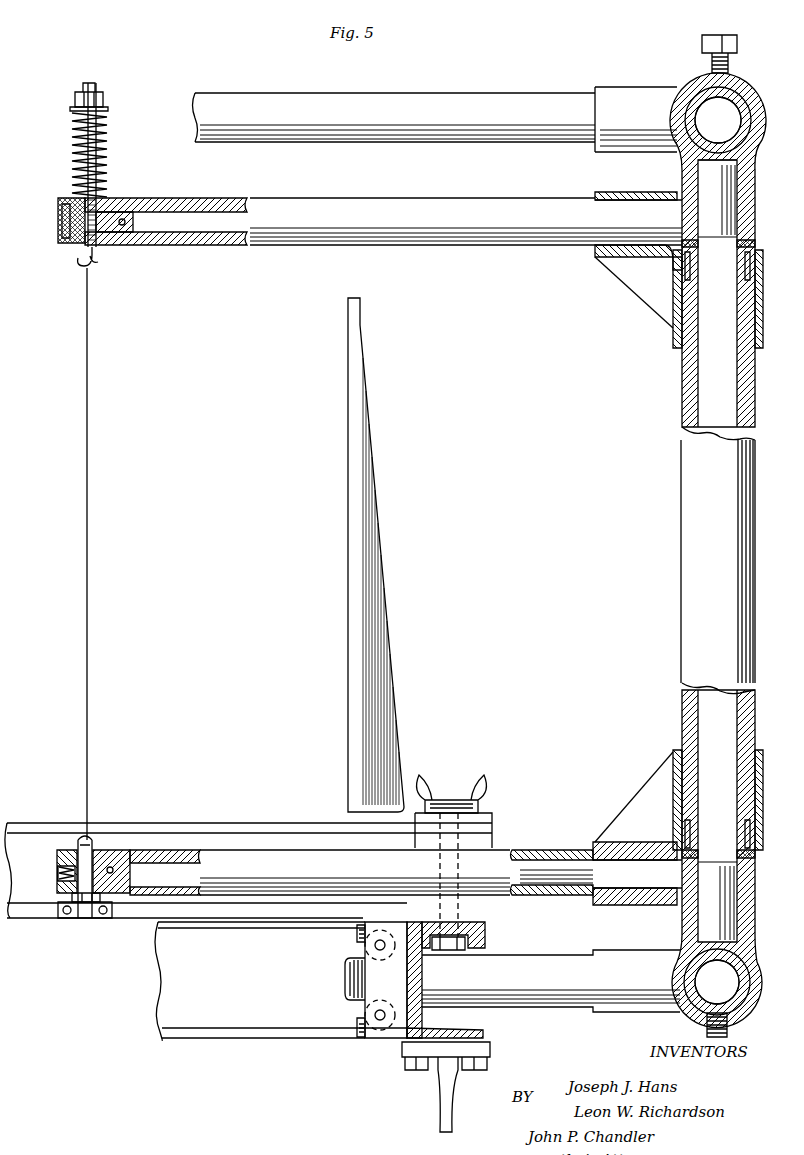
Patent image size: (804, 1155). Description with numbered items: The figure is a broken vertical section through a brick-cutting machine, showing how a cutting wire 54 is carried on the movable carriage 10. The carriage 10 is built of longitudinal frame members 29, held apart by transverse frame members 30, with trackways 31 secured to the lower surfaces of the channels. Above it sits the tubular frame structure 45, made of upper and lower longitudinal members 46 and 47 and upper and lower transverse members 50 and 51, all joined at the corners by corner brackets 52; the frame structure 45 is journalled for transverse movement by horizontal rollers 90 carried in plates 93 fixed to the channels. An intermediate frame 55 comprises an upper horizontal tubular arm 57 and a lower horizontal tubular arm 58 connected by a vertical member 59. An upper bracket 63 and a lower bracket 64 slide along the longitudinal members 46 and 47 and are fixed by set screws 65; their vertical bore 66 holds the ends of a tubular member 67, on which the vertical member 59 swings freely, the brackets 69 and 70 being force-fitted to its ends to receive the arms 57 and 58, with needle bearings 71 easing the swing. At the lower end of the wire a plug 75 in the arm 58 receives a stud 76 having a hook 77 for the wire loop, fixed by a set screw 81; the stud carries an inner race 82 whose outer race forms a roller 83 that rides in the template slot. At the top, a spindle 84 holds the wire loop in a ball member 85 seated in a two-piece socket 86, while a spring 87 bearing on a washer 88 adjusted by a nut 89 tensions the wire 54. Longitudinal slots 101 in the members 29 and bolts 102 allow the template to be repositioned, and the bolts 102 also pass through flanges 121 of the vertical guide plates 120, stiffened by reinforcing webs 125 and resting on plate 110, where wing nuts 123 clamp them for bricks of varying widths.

The movable frame or carriage 10 is at (473, 976).
The longitudinal frame members 29 is at (422, 1017).
The transverse frame members 30 is at (292, 1037).
The trackways 31 is at (453, 1104).
The frame structure 45 is at (683, 528).
The upper longitudinal member 46 is at (690, 86).
The lower longitudinal member 47 is at (724, 965).
The upper transverse member 50 is at (483, 98).
The lower transverse member 51 is at (570, 1007).
The corner brackets 52 is at (616, 90).
The cutting wire 54 is at (88, 553).
The intermediate frame 55 is at (352, 164).
The upper horizontal tubular arm 57 is at (486, 246).
The lower horizontal tubular arm 58 is at (260, 848).
The vertical member 59 is at (681, 480).
The upper bracket 63 is at (757, 97).
The lower bracket 64 is at (748, 1010).
The set screws 65 is at (736, 46).
The vertical bore 66 is at (745, 212).
The tubular member 67 is at (742, 734).
The upper bracket 69 is at (672, 328).
The lower bracket 70 is at (600, 842).
The needle bearings 71 is at (687, 278).
The plug 75 is at (127, 848).
The stud 76 is at (60, 850).
The hook 77 is at (80, 843).
The set screw 81 is at (58, 870).
The inner race 82 is at (88, 920).
The roller 83 is at (112, 918).
The spindle 84 is at (98, 250).
The ball member 85 is at (108, 205).
The two-piece socket 86 is at (130, 218).
The spring 87 is at (108, 160).
The washer 88 is at (108, 107).
The nut 89 is at (98, 92).
The horizontal rollers 90 is at (364, 945).
The plates 93 is at (390, 996).
The longitudinal slots 101 is at (462, 928).
The bolts 102 is at (466, 945).
The plate 110 is at (206, 822).
The vertical guide plates 120 is at (348, 420).
The flanges 121 is at (406, 809).
The wing nuts 123 is at (478, 790).
The reinforcing webs 125 is at (384, 638).